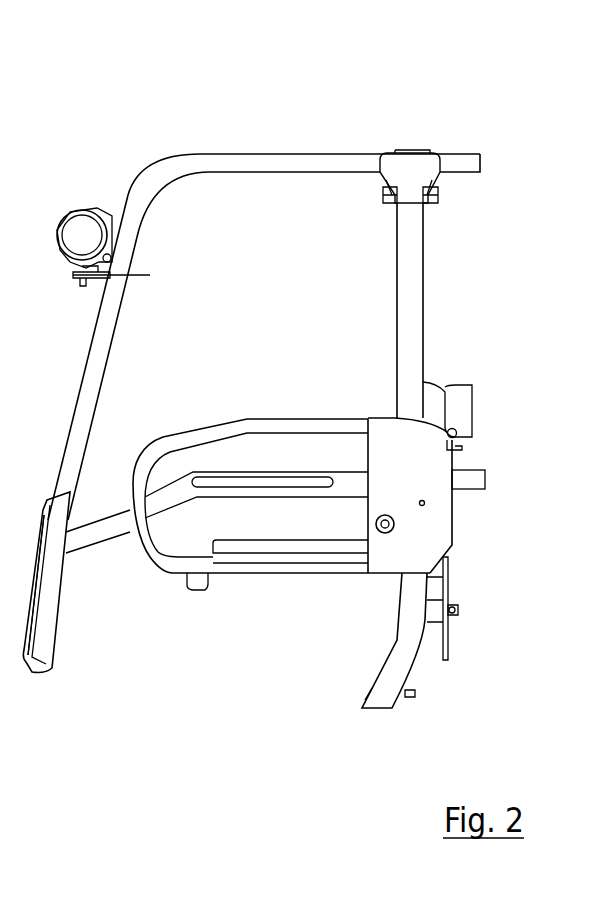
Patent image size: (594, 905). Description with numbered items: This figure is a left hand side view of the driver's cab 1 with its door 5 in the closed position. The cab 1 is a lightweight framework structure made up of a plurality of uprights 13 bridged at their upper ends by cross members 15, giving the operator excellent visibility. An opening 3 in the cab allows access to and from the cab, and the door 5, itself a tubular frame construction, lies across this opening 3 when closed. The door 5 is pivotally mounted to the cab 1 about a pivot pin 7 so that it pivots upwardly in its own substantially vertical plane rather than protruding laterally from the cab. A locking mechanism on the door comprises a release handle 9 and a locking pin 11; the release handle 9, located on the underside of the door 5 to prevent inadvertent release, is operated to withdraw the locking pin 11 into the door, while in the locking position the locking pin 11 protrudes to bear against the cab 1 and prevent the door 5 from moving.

The driver's cab 1 is at (370, 102).
The opening 3 is at (137, 657).
The door 5 is at (313, 424).
The pivot pin 7 is at (378, 532).
The release handle 9 is at (205, 590).
The locking pin 11 is at (500, 533).
The uprights 13 is at (95, 332).
The cross members 15 is at (262, 160).